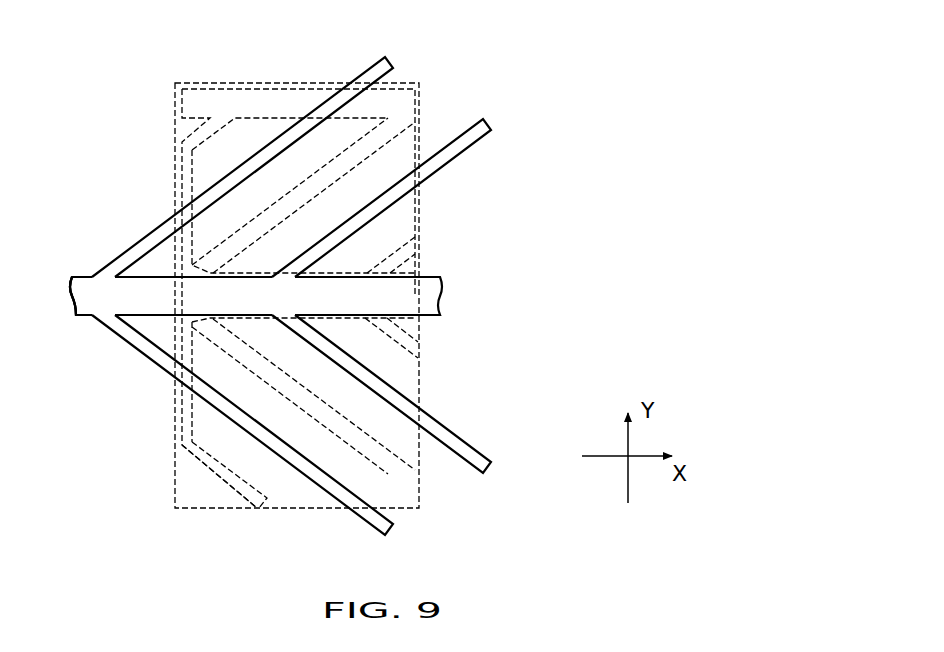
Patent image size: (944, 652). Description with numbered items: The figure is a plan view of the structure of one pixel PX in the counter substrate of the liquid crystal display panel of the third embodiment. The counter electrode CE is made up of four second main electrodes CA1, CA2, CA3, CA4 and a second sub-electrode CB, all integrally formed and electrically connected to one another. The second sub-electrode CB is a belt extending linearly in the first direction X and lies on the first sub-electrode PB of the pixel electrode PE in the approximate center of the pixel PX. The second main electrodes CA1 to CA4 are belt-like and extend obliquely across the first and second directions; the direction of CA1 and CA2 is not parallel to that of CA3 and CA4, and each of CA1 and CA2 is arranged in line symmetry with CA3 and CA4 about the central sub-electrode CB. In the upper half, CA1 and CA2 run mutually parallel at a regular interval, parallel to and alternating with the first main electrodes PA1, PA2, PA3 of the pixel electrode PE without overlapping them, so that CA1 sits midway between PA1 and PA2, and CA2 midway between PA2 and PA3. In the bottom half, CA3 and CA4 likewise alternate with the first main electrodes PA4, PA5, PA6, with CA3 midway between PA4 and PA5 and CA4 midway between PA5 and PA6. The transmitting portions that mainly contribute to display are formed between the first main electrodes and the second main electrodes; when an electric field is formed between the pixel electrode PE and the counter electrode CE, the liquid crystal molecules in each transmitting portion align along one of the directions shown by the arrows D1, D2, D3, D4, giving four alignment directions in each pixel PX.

The pixel PX is at (256, 82).
The pixel electrode PE is at (416, 104).
The first main electrode PA1 is at (190, 133).
The first main electrode PA2 is at (326, 188).
The first main electrode PA3 is at (418, 247).
The first main electrode PA4 is at (258, 510).
The first main electrode PA5 is at (418, 486).
The first main electrode PA6 is at (420, 354).
The first sub-electrode PB is at (337, 318).
The second sub-electrode CB is at (75, 296).
The counter electrode CE is at (80, 319).
The second main electrode CA1 is at (140, 242).
The second main electrode CA2 is at (455, 144).
The second main electrode CA3 is at (392, 530).
The second main electrode CA4 is at (458, 442).
The alignment direction arrow D1 is at (228, 158).
The alignment direction arrow D2 is at (248, 187).
The alignment direction arrow D3 is at (362, 393).
The alignment direction arrow D4 is at (383, 368).